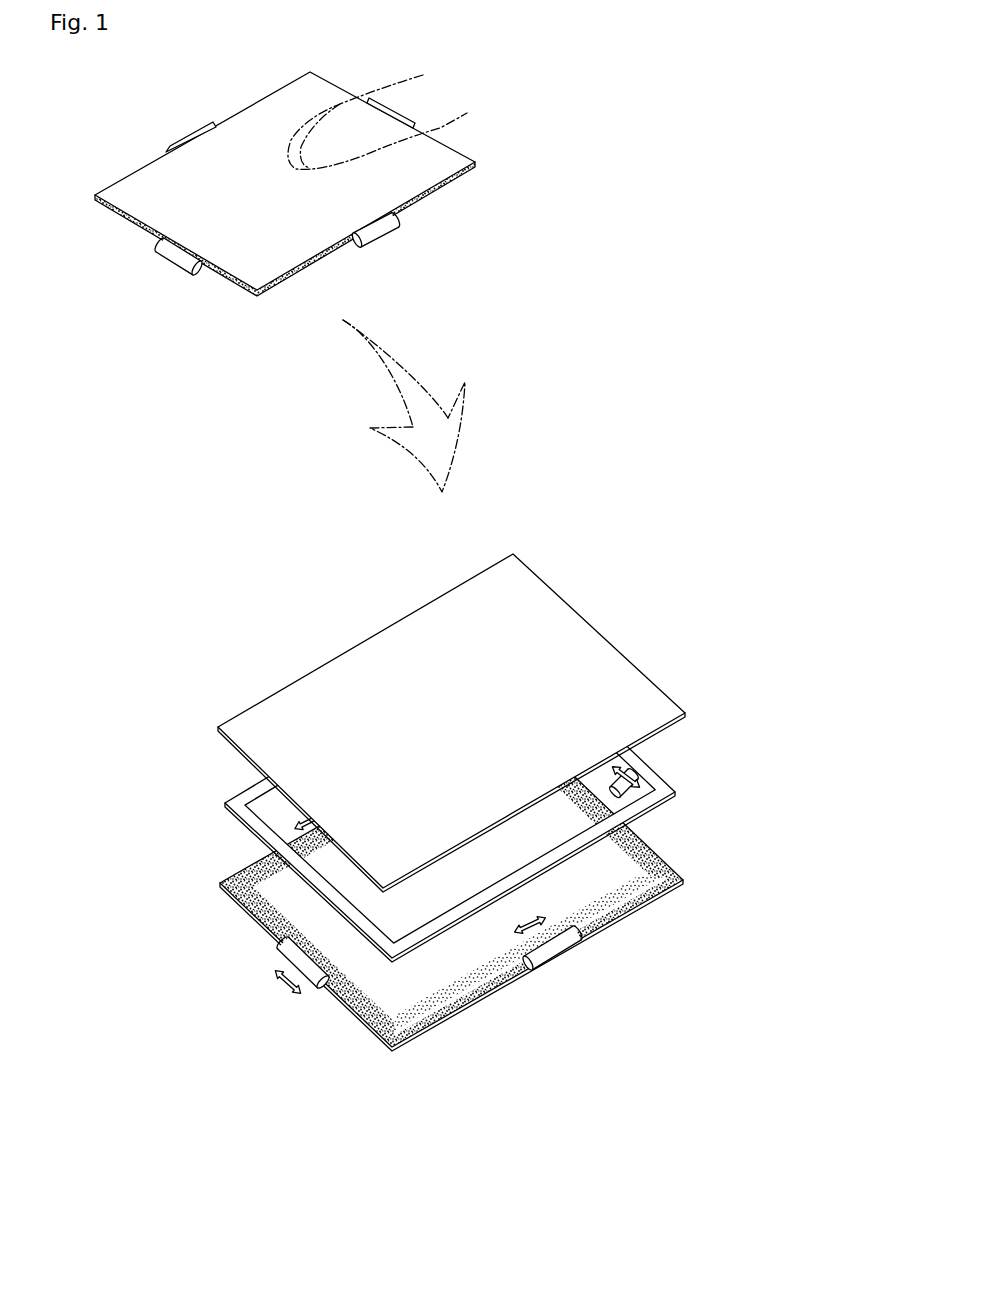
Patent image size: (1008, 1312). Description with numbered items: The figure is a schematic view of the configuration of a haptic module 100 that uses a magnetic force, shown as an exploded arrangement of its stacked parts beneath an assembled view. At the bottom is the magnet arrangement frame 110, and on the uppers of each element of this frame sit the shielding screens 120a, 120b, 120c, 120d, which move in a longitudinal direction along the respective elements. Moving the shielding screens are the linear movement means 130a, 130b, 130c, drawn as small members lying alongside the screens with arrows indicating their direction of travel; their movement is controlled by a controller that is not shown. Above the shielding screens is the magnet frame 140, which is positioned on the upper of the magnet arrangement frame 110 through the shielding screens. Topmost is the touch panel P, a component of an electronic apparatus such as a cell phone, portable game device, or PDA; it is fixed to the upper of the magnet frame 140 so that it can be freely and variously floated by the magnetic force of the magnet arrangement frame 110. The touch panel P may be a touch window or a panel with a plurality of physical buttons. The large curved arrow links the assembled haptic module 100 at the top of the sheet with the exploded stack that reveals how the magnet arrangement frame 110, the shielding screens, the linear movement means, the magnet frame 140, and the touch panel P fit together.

The haptic module 100 is at (267, 358).
The magnet arrangement frame 110 is at (388, 1057).
The shielding screen 120a is at (365, 1008).
The shielding screen 120b is at (492, 972).
The shielding screen 120c is at (662, 845).
The shielding screen 120d is at (230, 872).
The linear movement means 130a is at (296, 958).
The linear movement means 130b is at (560, 948).
The linear movement means 130c is at (632, 763).
The magnet frame 140 is at (223, 798).
The touch panel P is at (556, 684).